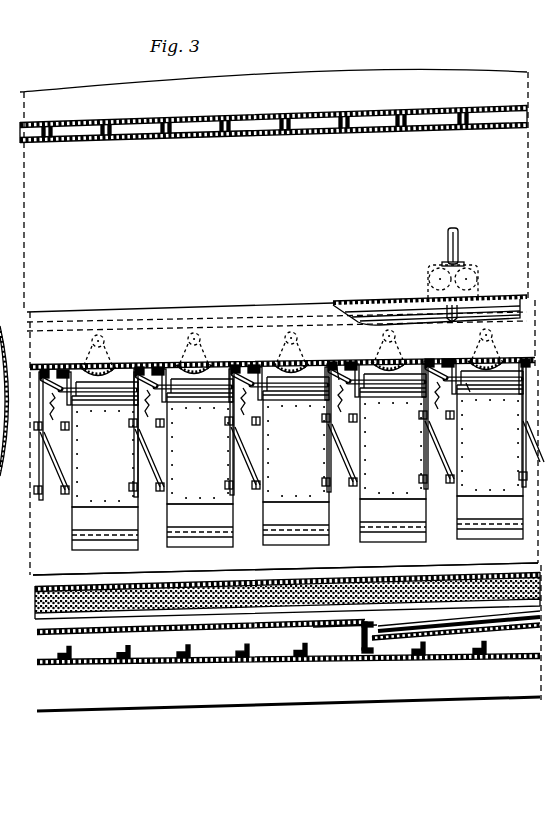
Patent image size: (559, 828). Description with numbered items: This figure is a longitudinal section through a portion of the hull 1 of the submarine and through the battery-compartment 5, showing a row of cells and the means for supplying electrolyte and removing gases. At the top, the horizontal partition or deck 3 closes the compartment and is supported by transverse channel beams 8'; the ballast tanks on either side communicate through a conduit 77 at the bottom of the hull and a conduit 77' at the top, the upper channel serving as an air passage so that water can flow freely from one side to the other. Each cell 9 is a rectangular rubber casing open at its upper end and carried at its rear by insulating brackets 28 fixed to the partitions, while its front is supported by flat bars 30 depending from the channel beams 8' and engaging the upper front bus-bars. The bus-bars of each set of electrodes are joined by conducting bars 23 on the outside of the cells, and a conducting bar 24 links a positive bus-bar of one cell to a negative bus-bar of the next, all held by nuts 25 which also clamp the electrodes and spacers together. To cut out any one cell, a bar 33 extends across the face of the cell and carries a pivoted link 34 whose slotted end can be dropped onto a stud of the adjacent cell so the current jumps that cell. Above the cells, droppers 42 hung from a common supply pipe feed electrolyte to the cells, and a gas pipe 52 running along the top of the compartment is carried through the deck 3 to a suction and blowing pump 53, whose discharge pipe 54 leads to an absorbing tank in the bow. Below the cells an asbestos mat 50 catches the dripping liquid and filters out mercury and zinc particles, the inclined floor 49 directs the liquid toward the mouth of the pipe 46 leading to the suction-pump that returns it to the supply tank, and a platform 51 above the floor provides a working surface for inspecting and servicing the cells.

The hull 1 is at (445, 110).
The conduit 77' is at (255, 112).
The discharge pipe 54 is at (459, 238).
The suction and blowing pump 53 is at (462, 273).
The dropper 42 is at (108, 352).
The pipe 52 is at (387, 320).
The horizontal partition or deck 3 is at (52, 316).
The transverse channel beam 8' is at (284, 355).
The link 34 is at (342, 362).
The flat bar 30 is at (130, 413).
The bar 33 is at (203, 392).
The conducting bar 24 is at (148, 455).
The cell 9 is at (297, 451).
The conducting bar 23 is at (327, 485).
The nut 25 is at (141, 494).
The bracket 28 is at (117, 540).
The battery-compartment 5 is at (192, 560).
The platform 51 is at (285, 563).
The inclined floor 49 is at (62, 637).
The conduit 77 is at (288, 652).
The mat 50 is at (173, 597).
The pipe 46 is at (400, 638).